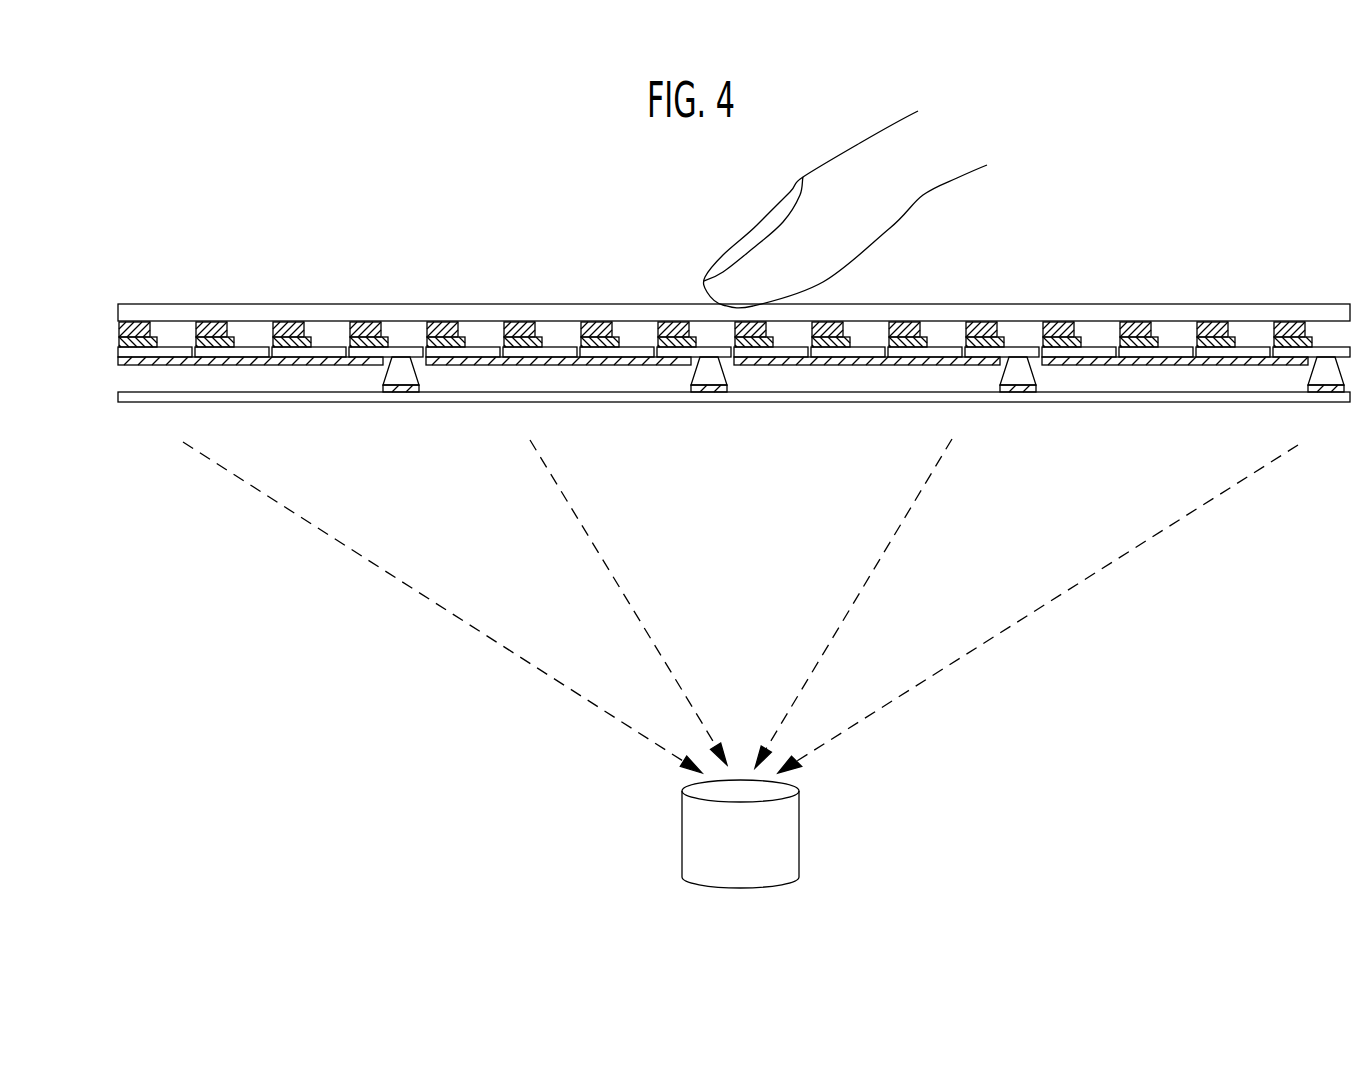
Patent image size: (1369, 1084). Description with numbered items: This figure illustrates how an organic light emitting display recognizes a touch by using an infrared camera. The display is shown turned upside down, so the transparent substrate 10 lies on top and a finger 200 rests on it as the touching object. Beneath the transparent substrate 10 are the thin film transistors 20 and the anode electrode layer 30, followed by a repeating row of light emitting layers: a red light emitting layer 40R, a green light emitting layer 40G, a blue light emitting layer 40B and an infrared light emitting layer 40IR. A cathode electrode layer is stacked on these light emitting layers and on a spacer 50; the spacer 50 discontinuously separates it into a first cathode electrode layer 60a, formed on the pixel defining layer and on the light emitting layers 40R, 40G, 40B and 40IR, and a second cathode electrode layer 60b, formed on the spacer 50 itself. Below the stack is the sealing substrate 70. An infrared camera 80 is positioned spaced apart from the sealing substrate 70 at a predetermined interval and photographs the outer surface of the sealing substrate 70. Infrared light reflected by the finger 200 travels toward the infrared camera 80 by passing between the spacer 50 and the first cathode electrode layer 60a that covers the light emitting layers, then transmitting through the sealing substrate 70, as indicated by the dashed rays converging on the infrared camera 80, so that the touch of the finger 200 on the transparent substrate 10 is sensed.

The transparent substrate 10 is at (120, 312).
The thin film transistors 20 is at (689, 301).
The anode electrode layer 30 is at (118, 340).
The red light emitting layer 40R is at (177, 350).
The green light emitting layer 40G is at (253, 350).
The blue light emitting layer 40B is at (327, 350).
The infrared light emitting layer 40IR is at (410, 350).
The spacer 50 is at (395, 383).
The first cathode electrode layer 60a is at (118, 360).
The second cathode electrode layer 60b is at (412, 385).
The sealing substrate 70 is at (118, 396).
The infrared camera 80 is at (785, 842).
The finger 200 is at (948, 177).